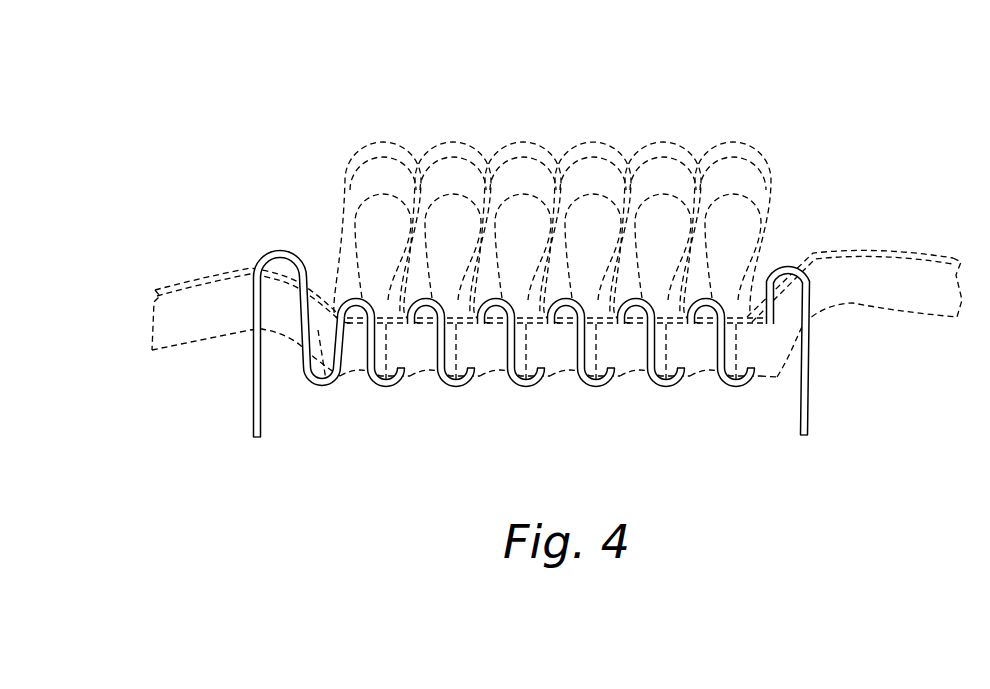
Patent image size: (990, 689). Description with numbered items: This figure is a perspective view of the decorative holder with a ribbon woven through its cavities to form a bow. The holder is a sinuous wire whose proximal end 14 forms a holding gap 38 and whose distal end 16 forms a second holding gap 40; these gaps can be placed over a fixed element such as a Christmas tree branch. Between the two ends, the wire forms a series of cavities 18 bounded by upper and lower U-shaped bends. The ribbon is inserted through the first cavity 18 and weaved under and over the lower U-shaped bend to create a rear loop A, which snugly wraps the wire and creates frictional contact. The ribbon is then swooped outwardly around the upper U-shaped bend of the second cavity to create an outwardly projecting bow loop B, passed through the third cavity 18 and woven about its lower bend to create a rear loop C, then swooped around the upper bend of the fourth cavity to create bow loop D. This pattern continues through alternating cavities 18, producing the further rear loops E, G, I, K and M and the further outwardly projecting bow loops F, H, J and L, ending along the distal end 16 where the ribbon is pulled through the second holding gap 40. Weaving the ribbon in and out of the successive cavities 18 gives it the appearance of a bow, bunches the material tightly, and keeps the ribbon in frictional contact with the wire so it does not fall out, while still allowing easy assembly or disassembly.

The proximal end 14 is at (252, 287).
The distal end 16 is at (808, 350).
The cavity 18 is at (425, 323).
The holding gap 38 is at (278, 270).
The second holding gap 40 is at (780, 275).
The rear loop A is at (348, 365).
The outwardly projecting bow loop B is at (387, 157).
The rear loop C is at (421, 365).
The outwardly projecting bow loop D is at (452, 157).
The rear loop E is at (491, 365).
The outwardly projecting bow loop F is at (523, 157).
The rear loop G is at (562, 365).
The outwardly projecting bow loop H is at (590, 157).
The rear loop I is at (632, 363).
The outwardly projecting bow loop J is at (662, 157).
The rear loop K is at (692, 365).
The outwardly projecting bow loop L is at (735, 157).
The rear loop M is at (764, 365).